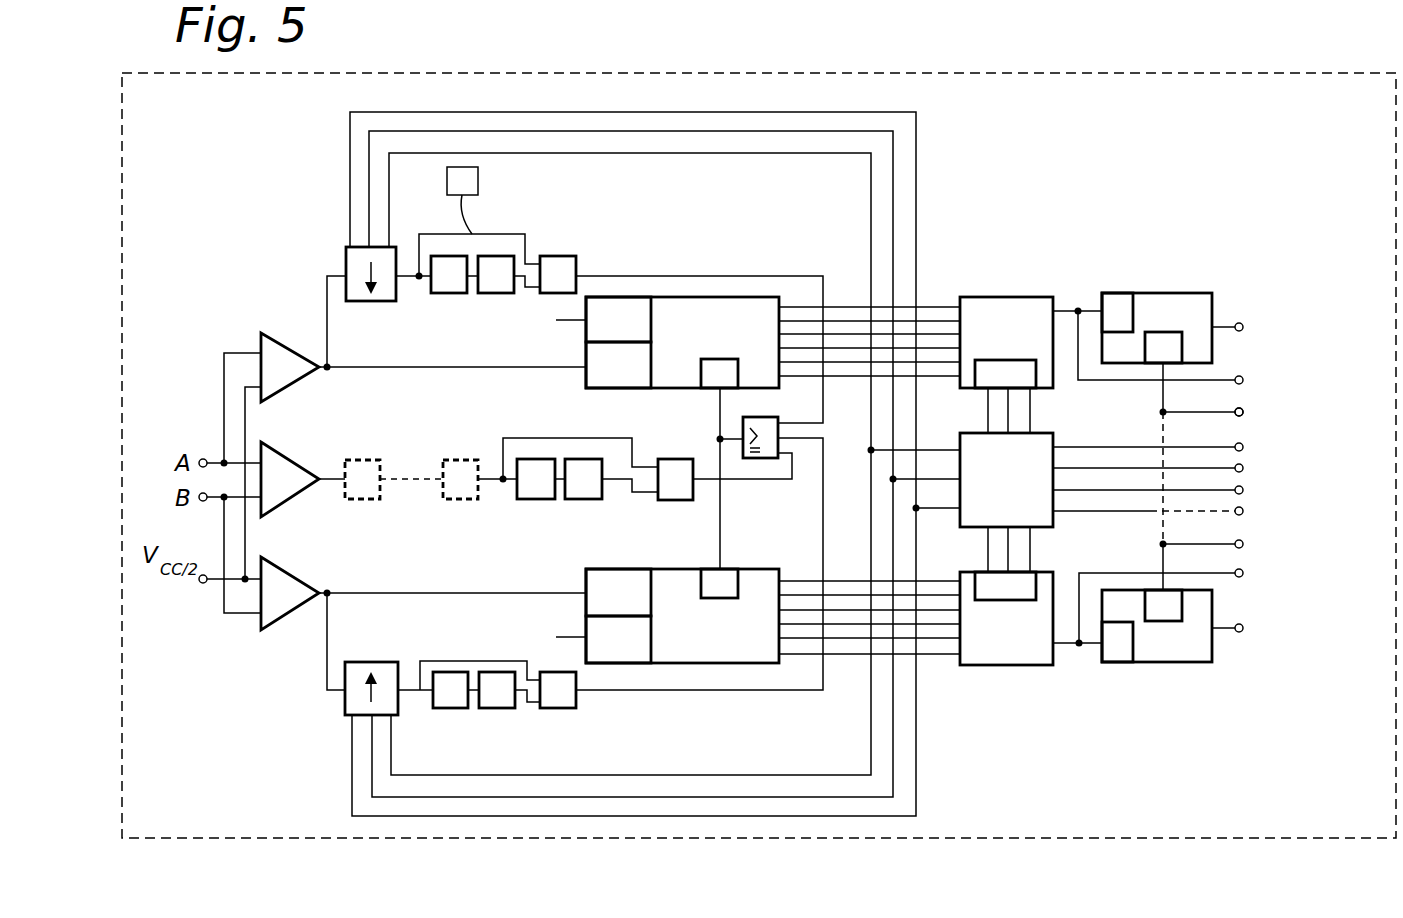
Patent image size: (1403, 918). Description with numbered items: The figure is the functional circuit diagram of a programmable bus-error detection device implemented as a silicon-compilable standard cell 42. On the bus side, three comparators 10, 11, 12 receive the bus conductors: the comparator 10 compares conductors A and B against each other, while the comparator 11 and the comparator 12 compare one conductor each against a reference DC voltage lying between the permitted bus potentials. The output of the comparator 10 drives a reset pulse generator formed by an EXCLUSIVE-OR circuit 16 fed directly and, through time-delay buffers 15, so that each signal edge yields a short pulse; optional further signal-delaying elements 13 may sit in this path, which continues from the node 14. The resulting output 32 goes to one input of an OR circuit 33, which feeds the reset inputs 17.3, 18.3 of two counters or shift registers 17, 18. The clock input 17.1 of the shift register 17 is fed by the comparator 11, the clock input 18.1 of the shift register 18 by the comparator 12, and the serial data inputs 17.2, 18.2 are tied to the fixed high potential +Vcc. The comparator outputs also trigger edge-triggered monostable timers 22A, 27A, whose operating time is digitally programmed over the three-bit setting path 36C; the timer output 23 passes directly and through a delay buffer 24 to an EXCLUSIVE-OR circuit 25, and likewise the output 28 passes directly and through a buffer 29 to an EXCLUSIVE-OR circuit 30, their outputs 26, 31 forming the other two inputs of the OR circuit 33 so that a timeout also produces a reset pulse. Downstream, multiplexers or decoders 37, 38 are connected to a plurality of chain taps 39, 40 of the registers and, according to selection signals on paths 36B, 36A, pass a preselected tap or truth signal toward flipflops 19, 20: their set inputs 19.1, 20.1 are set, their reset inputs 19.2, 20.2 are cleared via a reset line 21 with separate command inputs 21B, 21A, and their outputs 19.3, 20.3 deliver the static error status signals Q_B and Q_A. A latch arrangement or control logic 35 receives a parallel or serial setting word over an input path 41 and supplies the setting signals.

The standard cell 42 is at (500, 66).
The setting or preselection path 36C is at (683, 153).
The comparator 11 is at (300, 362).
The comparator 10 is at (300, 470).
The comparator 12 is at (306, 605).
The edge-triggered monostable timer 22A is at (346, 262).
The edge-triggered monostable timer 27A is at (350, 705).
The timer output 23 is at (417, 282).
The buffer 24 is at (490, 295).
The EXCLUSIVE-OR circuit 25 is at (553, 258).
The output of EXCLUSIVE-OR circuit 26 is at (792, 276).
The timer output 28 is at (428, 700).
The buffer 29 is at (492, 708).
The EXCLUSIVE-OR circuit 30 is at (554, 708).
The output of EXCLUSIVE-OR circuit 31 is at (782, 693).
The signal-delaying elements 13 is at (413, 522).
The connection node 14 is at (500, 500).
The time-delay means 15 is at (590, 500).
The EXCLUSIVE-OR circuit 16 is at (670, 503).
The output of EXCLUSIVE-OR circuit 32 is at (737, 481).
The OR circuit 33 is at (757, 420).
The counter or shift register 17 is at (720, 329).
The clock input 17.1 is at (586, 380).
The serial data input 17.2 is at (617, 297).
The reset input 17.3 is at (706, 395).
The counter or shift register 18 is at (720, 632).
The clock input 18.1 is at (635, 575).
The serial data input 18.2 is at (617, 665).
The reset input 18.3 is at (735, 569).
The multiplexer or decoder 37 is at (1012, 297).
The multiplexer or decoder 38 is at (1000, 667).
The shift register or counter chain taps 39 is at (928, 294).
The shift register or counter chain taps 40 is at (940, 668).
The control logic 35 is at (1053, 441).
The setting path 36A is at (1000, 552).
The setting path 36B is at (1000, 412).
The flipflop 19 is at (1178, 303).
The set input 19.1 is at (1112, 293).
The reset input 19.2 is at (1183, 340).
The output 19.3 is at (1228, 325).
The flipflop 20 is at (1178, 650).
The set input 20.1 is at (1102, 662).
The reset input 20.2 is at (1150, 622).
The output 20.3 is at (1228, 632).
The reset line 21 is at (1246, 412).
The command input 21B is at (1246, 412).
The command input 21A is at (1246, 544).
The input path 41 is at (1246, 511).